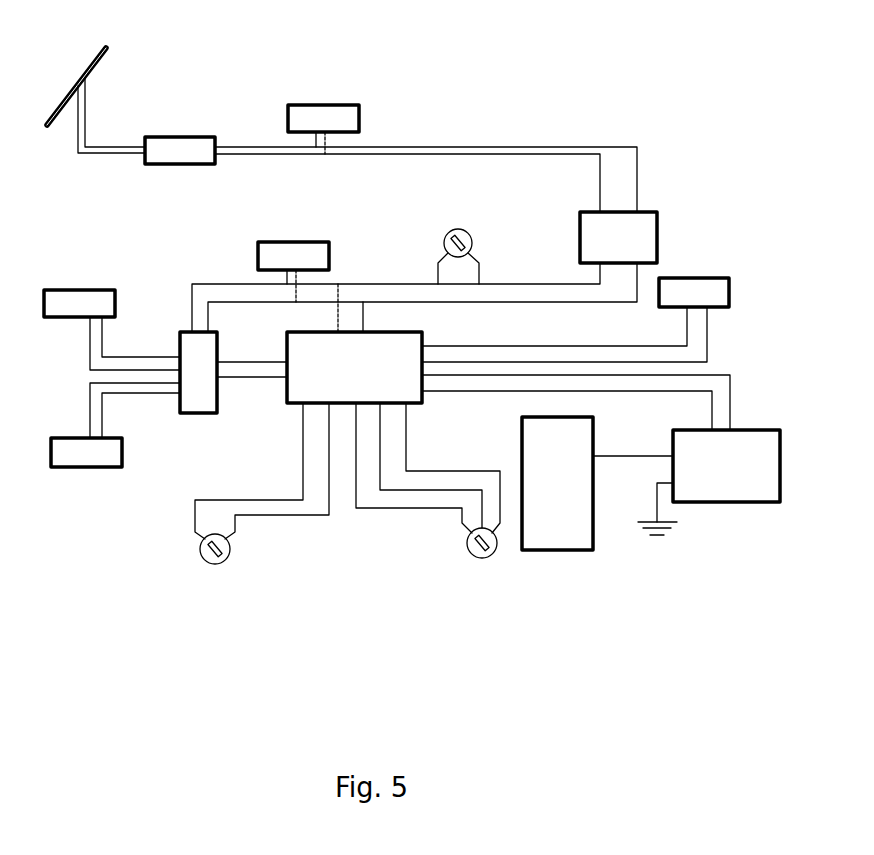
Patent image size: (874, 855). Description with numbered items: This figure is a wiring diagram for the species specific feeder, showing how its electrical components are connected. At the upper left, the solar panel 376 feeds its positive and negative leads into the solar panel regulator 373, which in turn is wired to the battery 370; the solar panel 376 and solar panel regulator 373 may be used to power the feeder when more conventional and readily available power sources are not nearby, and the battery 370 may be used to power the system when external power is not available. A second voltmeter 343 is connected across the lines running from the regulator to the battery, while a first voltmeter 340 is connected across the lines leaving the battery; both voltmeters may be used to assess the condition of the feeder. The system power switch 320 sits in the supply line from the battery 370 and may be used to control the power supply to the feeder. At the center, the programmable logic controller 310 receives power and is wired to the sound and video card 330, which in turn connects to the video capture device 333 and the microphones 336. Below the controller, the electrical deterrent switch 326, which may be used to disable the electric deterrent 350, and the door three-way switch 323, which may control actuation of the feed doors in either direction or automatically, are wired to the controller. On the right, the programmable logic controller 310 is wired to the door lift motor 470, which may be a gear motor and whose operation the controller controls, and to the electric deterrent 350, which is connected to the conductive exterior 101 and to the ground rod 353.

The conductive exterior 101 is at (593, 442).
The programmable logic controller 310 is at (422, 340).
The system power switch 320 is at (472, 240).
The door three-way switch 323 is at (477, 558).
The electrical deterrent switch 326 is at (212, 564).
The sound and video card 330 is at (207, 413).
The video capture device 333 is at (115, 303).
The microphones 336 is at (108, 467).
The first voltmeter 340 is at (329, 255).
The second voltmeter 343 is at (359, 118).
The electric deterrent 350 is at (755, 502).
The ground rod 353 is at (657, 537).
The battery 370 is at (657, 248).
The solar panel regulator 373 is at (198, 164).
The solar panel 376 is at (95, 72).
The door lift motor 470 is at (729, 293).